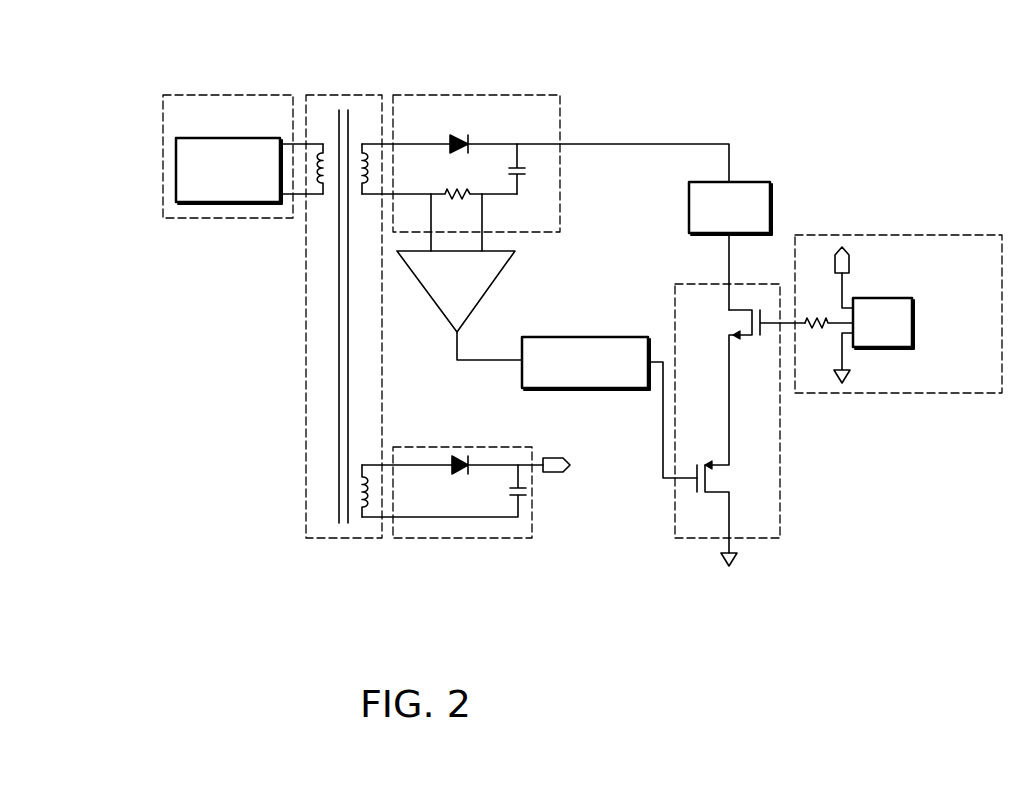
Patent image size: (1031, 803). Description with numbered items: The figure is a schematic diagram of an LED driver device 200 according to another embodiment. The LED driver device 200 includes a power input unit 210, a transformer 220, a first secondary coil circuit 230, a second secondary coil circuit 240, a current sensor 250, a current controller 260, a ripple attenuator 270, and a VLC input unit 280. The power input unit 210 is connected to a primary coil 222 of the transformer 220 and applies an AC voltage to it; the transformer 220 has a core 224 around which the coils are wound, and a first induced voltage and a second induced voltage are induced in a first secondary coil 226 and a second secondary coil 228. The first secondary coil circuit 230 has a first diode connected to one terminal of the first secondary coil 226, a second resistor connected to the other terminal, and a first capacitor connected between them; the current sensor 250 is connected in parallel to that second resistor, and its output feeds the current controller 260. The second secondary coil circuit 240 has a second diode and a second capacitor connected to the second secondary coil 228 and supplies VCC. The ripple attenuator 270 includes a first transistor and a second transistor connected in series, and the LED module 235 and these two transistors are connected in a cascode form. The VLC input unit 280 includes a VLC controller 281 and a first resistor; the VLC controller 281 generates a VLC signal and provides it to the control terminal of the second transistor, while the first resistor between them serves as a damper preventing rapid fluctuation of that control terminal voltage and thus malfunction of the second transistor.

The LED driver device 200 is at (596, 46).
The power input unit 210 is at (265, 95).
The transformer 220 is at (355, 95).
The primary coil 222 is at (317, 142).
The core 224 is at (348, 337).
The first secondary coil 226 is at (356, 142).
The second secondary coil 228 is at (372, 463).
The first secondary coil circuit 230 is at (516, 95).
The LED module 235 is at (749, 182).
The second secondary coil circuit 240 is at (492, 447).
The current sensor 250 is at (488, 292).
The current controller 260 is at (605, 337).
The ripple attenuator 270 is at (752, 284).
The VLC input unit 280 is at (962, 235).
The VLC controller 281 is at (906, 298).